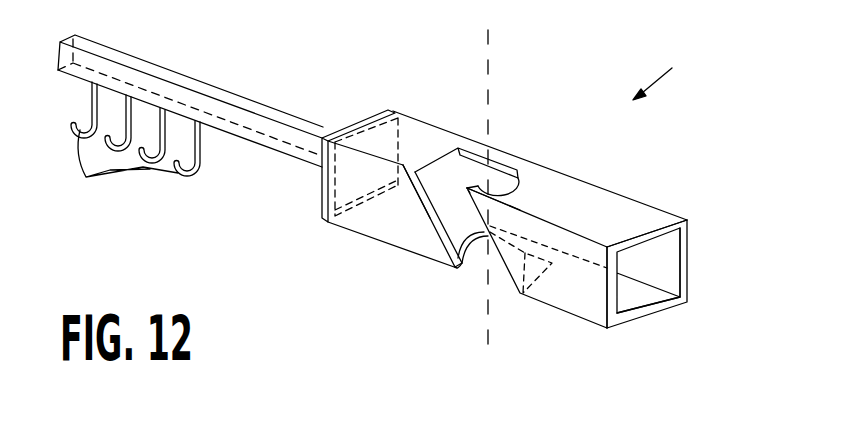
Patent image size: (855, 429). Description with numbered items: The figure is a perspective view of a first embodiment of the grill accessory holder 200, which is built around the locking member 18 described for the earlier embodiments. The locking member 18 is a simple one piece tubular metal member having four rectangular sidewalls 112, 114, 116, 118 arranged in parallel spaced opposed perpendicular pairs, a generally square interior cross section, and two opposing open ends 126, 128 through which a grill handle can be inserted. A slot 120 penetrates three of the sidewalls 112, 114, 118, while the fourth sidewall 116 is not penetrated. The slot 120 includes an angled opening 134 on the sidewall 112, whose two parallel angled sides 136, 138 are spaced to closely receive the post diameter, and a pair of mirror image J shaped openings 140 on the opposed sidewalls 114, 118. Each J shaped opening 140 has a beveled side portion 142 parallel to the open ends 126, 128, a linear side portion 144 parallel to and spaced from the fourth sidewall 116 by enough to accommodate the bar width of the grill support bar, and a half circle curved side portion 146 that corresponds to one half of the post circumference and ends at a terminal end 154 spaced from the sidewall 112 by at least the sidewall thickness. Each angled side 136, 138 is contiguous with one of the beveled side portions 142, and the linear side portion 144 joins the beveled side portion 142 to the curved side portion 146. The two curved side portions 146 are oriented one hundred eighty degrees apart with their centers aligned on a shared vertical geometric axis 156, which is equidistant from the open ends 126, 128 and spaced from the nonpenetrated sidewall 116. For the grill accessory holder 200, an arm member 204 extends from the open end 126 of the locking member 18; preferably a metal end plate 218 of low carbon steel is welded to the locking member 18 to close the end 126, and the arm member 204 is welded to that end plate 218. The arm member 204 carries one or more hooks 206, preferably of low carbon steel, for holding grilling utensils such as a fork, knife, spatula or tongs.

The grill accessory holder 200 is at (670, 74).
The arm member 204 is at (187, 73).
The hooks 206 is at (133, 143).
The open end 126 is at (350, 128).
The end plate 218 is at (388, 110).
The beveled side portion 142 is at (418, 164).
The linear side portion 144 is at (507, 162).
The J shaped openings 140 is at (513, 167).
The half circle curved side portion 146 is at (515, 180).
The slot 120 is at (495, 160).
The terminal end 154 is at (481, 185).
The vertical geometric axis 156 is at (522, 192).
The locking member 18 is at (553, 165).
The angled side 138 is at (482, 216).
The open end 128 is at (624, 274).
The sidewall 114 is at (632, 231).
The sidewall 112 is at (592, 304).
The fourth sidewall 116 is at (670, 276).
The sidewall 118 is at (648, 308).
The angled opening 134 is at (435, 223).
The angled side 136 is at (420, 207).